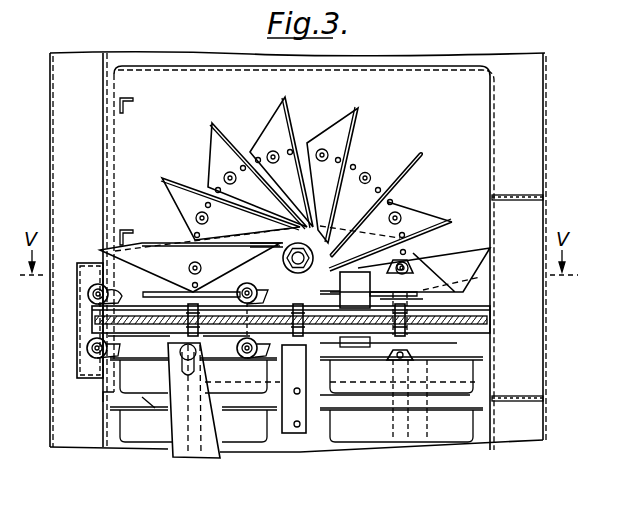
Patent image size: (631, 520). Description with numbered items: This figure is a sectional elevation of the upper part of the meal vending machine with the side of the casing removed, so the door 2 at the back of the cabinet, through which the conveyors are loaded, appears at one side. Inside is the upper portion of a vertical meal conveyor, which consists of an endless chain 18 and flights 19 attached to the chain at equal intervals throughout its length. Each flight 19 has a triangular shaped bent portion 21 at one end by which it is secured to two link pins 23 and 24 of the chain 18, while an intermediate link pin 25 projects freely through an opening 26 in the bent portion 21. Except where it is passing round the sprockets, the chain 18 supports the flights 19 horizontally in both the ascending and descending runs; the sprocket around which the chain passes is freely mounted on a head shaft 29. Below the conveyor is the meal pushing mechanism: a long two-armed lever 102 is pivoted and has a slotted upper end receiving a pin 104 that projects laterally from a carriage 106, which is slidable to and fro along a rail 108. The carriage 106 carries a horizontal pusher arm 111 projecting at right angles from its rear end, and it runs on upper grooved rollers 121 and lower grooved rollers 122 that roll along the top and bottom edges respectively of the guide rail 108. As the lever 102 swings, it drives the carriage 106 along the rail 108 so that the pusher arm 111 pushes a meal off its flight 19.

The door 2 is at (86, 113).
The endless chain 18 is at (395, 201).
The flights 19 is at (172, 180).
The triangular shaped bent portions 21 is at (282, 107).
The link pin 23 is at (355, 163).
The link pin 24 is at (392, 187).
The intermediate link pin 25 is at (374, 175).
The opening 26 is at (368, 173).
The head shaft 29 is at (298, 264).
The long two-armed lever 102 is at (178, 424).
The pin 104 is at (182, 358).
The carriage 106 is at (88, 293).
The rail 108 is at (460, 297).
The horizontal pusher arm 111 is at (92, 326).
The upper grooved rollers 121 is at (92, 303).
The lower grooved rollers 122 is at (90, 349).